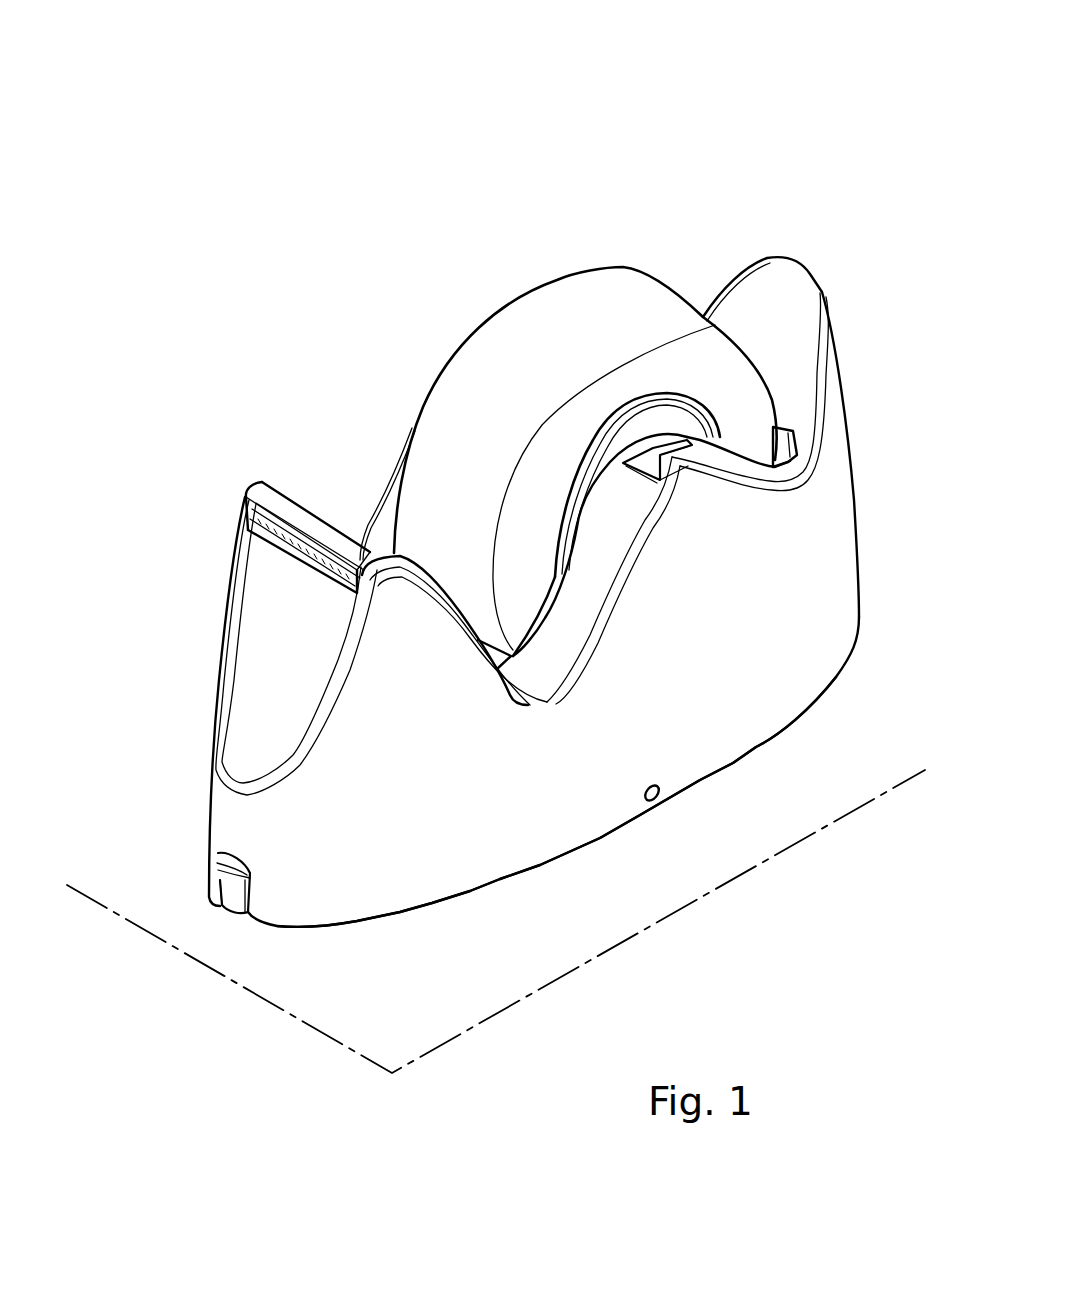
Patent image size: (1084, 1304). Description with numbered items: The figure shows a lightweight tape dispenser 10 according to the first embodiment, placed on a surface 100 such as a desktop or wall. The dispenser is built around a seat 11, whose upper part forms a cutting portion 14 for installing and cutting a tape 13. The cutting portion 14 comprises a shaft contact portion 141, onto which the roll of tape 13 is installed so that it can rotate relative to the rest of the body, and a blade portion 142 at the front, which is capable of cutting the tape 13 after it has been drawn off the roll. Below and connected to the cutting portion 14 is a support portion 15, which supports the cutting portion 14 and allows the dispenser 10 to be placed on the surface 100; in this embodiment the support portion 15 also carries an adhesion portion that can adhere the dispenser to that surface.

The lightweight tape dispenser 10 is at (306, 41).
The seat 11 is at (747, 263).
The tape 13 is at (524, 312).
The cutting portion 14 is at (397, 347).
The shaft contact portion 141 is at (597, 487).
The blade portion 142 is at (285, 518).
The support portion 15 is at (701, 749).
The supporting surface 100 is at (307, 1027).